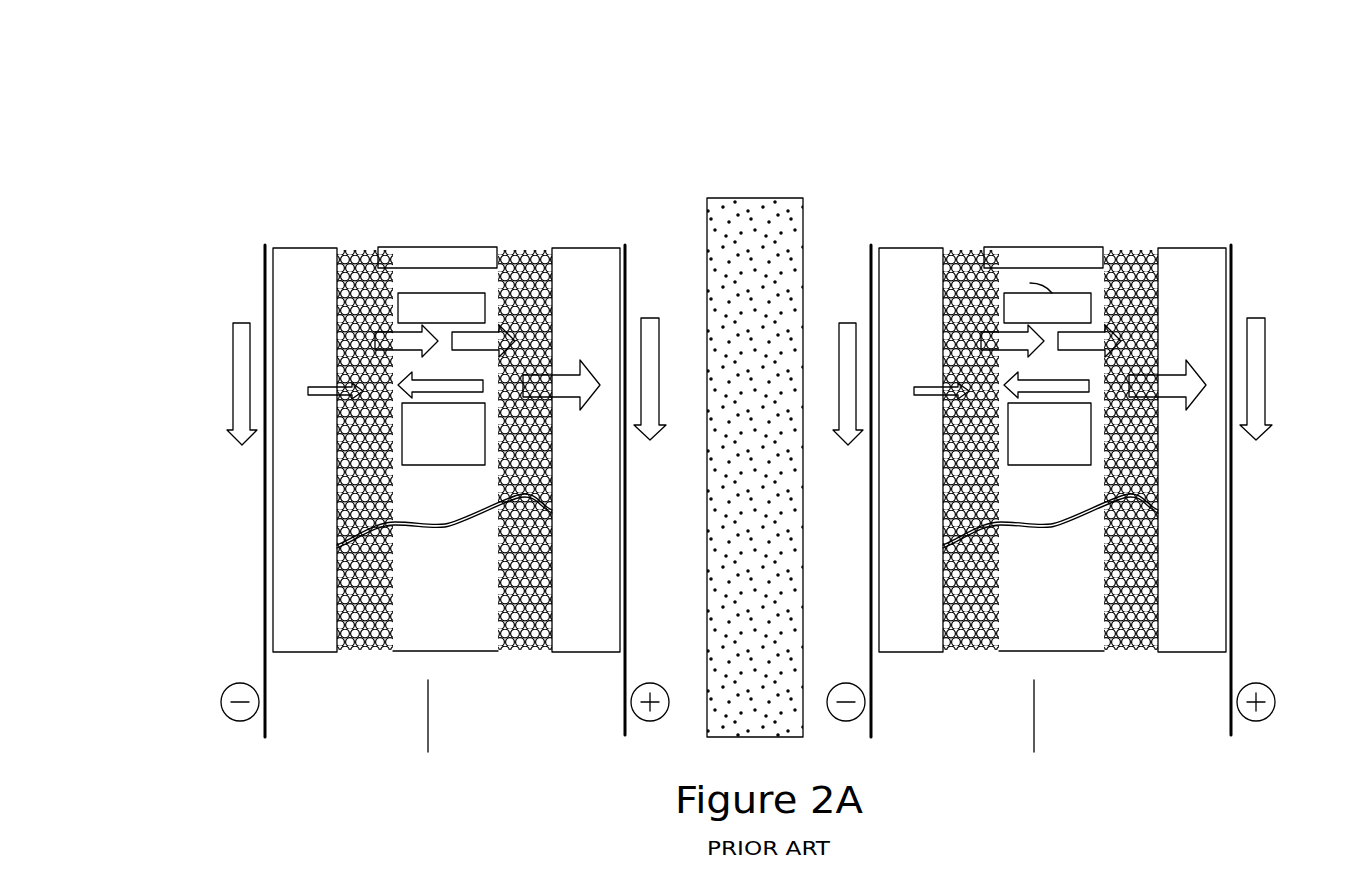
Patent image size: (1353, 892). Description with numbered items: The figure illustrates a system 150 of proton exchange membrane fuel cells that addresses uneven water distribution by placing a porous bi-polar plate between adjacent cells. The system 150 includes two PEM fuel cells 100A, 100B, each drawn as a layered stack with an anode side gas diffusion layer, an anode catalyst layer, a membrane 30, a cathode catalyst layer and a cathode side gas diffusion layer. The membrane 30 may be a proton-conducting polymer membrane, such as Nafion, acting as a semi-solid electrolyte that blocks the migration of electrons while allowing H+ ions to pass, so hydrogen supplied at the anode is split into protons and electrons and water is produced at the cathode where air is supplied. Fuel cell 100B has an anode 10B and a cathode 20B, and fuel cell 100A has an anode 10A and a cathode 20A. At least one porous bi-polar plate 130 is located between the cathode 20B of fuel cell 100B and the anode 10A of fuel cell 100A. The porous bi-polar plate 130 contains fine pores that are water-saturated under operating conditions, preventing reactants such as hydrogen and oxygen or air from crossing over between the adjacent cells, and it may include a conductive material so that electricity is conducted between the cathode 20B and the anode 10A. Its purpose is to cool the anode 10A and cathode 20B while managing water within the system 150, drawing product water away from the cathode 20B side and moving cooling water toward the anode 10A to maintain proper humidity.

The anode 10A is at (842, 457).
The anode 10B is at (267, 238).
The cathode 20A is at (1255, 455).
The cathode 20B is at (608, 240).
The membrane 30 is at (446, 293).
The PEM fuel cell 100A is at (1170, 113).
The PEM fuel cell 100B is at (505, 120).
The porous bi-polar plate 130 is at (748, 215).
The PEM fuel cell system 150 is at (897, 52).